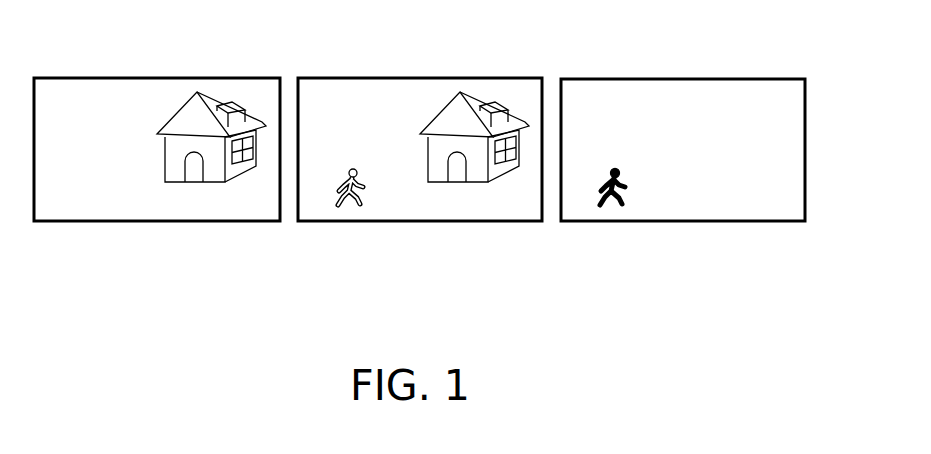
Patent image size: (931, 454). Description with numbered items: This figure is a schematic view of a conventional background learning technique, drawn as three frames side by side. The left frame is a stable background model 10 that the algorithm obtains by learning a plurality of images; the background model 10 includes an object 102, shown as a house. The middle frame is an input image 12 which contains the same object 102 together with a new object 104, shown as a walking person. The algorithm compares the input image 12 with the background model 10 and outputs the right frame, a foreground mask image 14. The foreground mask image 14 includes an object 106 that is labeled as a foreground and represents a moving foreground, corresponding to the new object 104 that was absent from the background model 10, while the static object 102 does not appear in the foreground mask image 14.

The background model 10 is at (75, 78).
The input image 12 is at (338, 78).
The foreground mask image 14 is at (600, 79).
The object 102 is at (172, 117).
The new object 104 is at (362, 197).
The object 106 is at (627, 197).